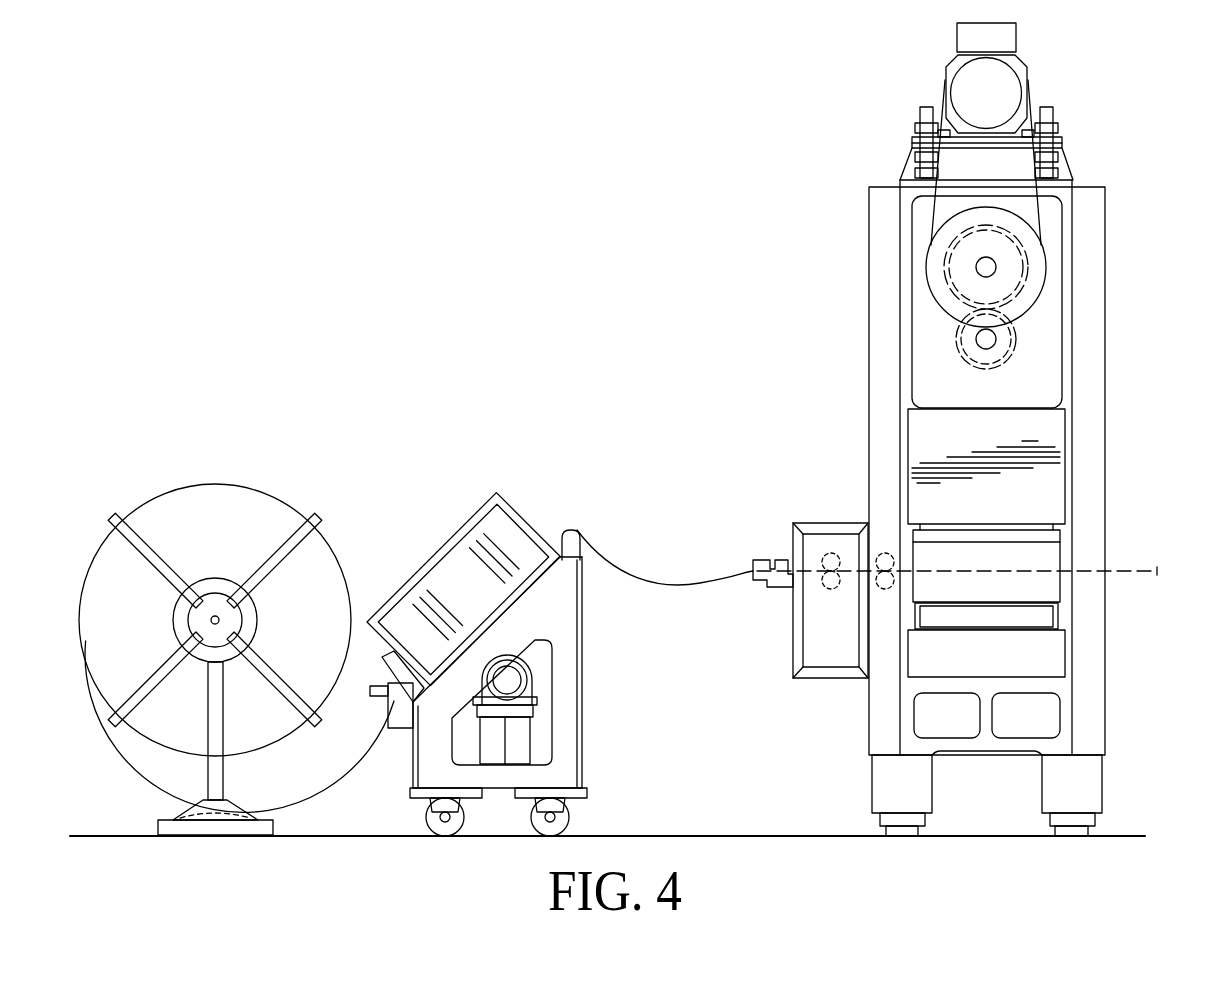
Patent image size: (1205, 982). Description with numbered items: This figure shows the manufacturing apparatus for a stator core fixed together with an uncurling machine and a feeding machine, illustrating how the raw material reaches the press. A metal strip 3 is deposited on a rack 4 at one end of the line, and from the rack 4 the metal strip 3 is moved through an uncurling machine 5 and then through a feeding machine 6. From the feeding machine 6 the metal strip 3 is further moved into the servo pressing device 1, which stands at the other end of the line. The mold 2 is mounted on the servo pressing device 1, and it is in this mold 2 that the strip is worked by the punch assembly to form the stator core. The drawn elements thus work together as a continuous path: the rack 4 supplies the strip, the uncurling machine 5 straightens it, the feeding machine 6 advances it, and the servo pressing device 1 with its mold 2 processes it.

The servo pressing device 1 is at (1092, 310).
The mold 2 is at (1042, 558).
The metal strip 3 is at (626, 568).
The rack 4 is at (215, 720).
The uncurling machine 5 is at (555, 608).
The feeding machine 6 is at (775, 582).